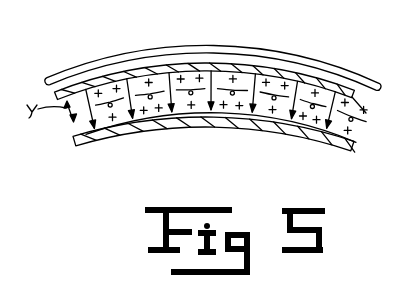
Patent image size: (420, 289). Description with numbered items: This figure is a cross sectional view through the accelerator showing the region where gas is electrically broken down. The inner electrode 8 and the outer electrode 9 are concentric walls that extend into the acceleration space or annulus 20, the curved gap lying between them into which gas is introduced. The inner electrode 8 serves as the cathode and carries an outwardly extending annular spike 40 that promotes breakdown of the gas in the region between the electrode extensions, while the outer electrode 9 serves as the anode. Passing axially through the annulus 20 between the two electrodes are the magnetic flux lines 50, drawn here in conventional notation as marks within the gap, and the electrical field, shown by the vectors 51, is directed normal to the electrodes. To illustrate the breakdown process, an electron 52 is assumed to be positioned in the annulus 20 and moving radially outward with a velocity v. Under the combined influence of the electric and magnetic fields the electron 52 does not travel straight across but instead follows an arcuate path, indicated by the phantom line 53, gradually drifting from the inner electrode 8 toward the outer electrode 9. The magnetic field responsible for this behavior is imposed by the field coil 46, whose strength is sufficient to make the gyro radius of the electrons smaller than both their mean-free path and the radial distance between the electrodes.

The field coil 46 is at (186, 46).
The outer electrode 9 is at (55, 93).
The electron 52 is at (86, 119).
The acceleration space or annulus 20 is at (72, 133).
The inner electrode 8 is at (112, 131).
The magnetic flux lines 50 is at (240, 107).
The electrical field vectors 51 is at (341, 112).
The phantom line (arcuate electron path) 53 is at (343, 107).
The annular spike 40 is at (352, 147).